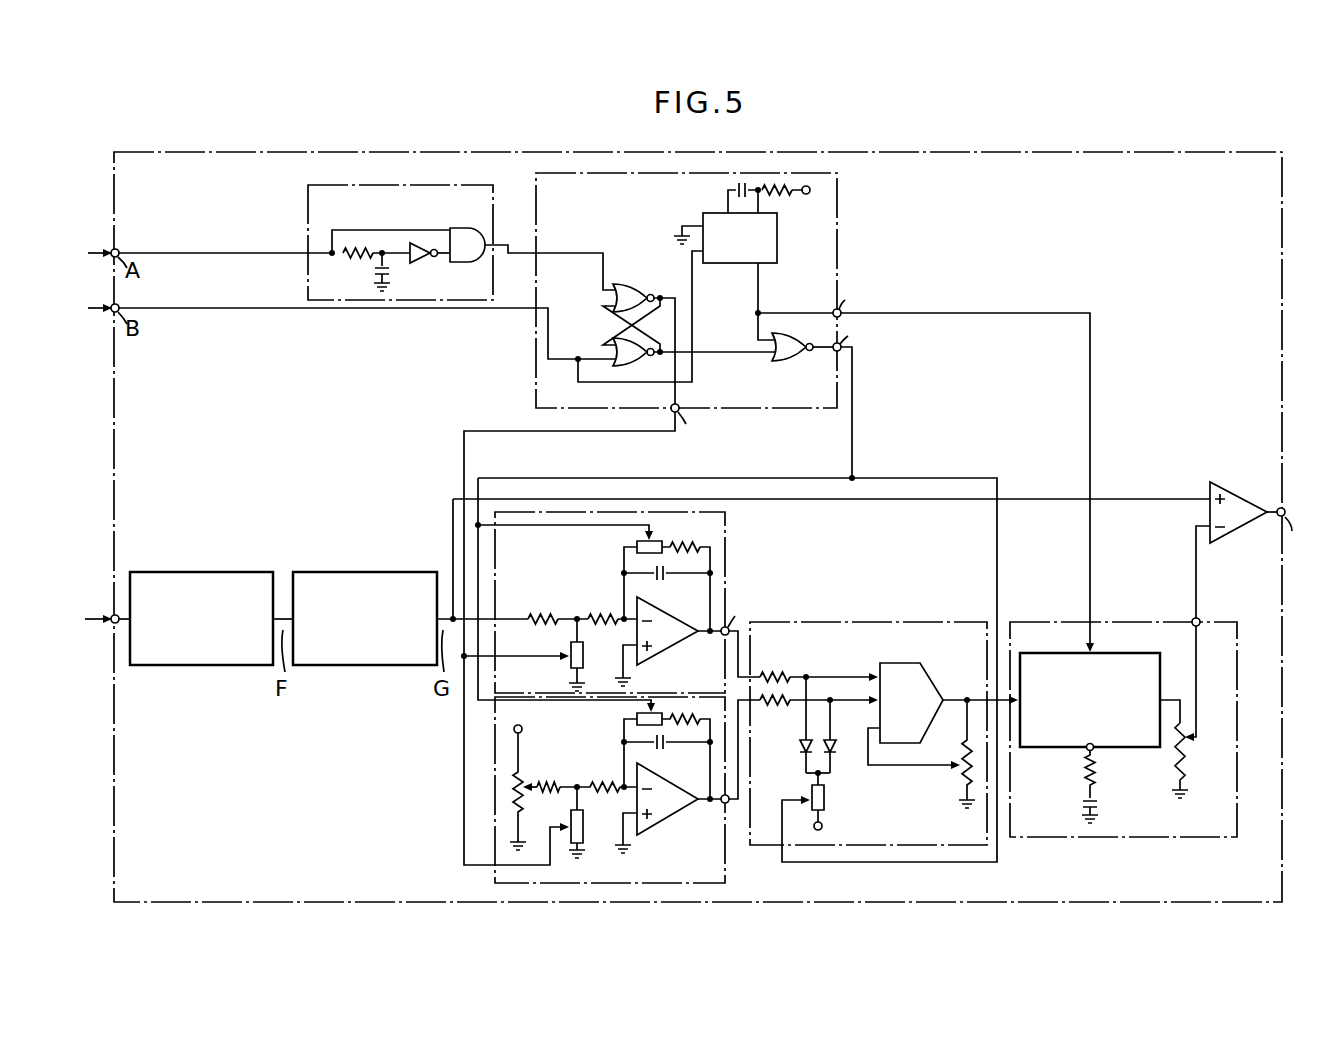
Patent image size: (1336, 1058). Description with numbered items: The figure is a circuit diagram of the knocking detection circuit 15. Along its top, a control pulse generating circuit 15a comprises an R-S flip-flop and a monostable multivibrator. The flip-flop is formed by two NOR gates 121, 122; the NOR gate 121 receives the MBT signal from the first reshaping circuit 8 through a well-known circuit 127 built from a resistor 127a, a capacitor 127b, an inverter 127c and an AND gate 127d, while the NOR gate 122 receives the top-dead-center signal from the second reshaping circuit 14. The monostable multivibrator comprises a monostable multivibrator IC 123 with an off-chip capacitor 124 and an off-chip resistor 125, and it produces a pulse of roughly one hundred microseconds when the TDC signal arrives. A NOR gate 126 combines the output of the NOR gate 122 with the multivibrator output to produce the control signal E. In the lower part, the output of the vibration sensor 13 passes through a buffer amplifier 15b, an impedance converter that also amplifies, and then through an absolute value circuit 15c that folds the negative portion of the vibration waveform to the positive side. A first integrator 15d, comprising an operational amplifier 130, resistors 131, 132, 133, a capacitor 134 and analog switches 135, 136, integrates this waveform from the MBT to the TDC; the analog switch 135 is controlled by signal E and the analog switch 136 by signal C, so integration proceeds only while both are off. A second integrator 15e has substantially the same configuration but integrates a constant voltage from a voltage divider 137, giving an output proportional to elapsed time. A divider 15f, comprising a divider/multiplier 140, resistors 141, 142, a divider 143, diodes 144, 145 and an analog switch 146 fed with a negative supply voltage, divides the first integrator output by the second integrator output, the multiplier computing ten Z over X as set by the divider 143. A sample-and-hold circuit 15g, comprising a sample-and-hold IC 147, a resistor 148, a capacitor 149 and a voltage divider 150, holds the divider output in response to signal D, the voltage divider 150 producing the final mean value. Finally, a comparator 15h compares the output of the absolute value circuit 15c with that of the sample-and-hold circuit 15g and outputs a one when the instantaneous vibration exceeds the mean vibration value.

The knocking detection circuit 15 is at (1090, 153).
The first reshaping circuit 8 is at (89, 254).
The second reshaping circuit 14 is at (89, 321).
The vibration sensor 13 is at (89, 634).
The input circuit 127 is at (462, 228).
The resistor 127a is at (350, 258).
The capacitor 127b is at (390, 270).
The inverter 127c is at (418, 243).
The AND gate 127d is at (470, 228).
The control pulse generating circuit 15a is at (838, 216).
The NOR gate 121 is at (646, 291).
The NOR gate 122 is at (612, 352).
The monostable multivibrator IC 123 is at (777, 240).
The off-chip capacitor 124 is at (735, 188).
The off-chip resistor 125 is at (782, 195).
The NOR gate 126 is at (796, 362).
The buffer amplifier 15b is at (238, 665).
The absolute value circuit 15c is at (403, 665).
The first integrator 15d is at (727, 543).
The operational amplifier 130 is at (688, 648).
The resistor 131 is at (544, 604).
The resistor 132 is at (602, 604).
The resistor 133 is at (704, 534).
The capacitor 134 is at (660, 582).
The analog switch 135 is at (640, 541).
The analog switch 136 is at (570, 665).
The second integrator 15e is at (727, 852).
The voltage divider 137 is at (523, 775).
The divider 15f is at (870, 622).
The divider/multiplier 140 is at (921, 676).
The resistor 141 is at (771, 672).
The resistor 142 is at (771, 705).
The divider 143 is at (960, 772).
The diode 144 is at (797, 748).
The diode 145 is at (838, 745).
The analog switch 146 is at (826, 799).
The sample-and-hold circuit 15g is at (1237, 640).
The sample-and-hold IC 147 is at (1126, 642).
The resistor 148 is at (1094, 762).
The capacitor 149 is at (1096, 801).
The voltage divider 150 is at (1187, 760).
The comparator 15h is at (1248, 481).